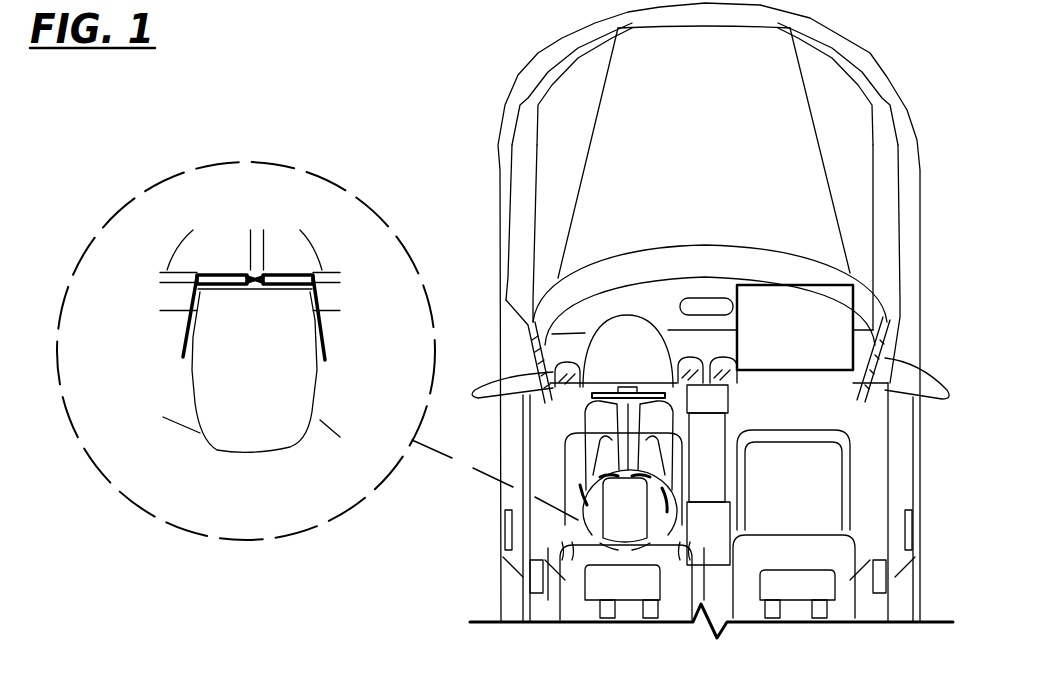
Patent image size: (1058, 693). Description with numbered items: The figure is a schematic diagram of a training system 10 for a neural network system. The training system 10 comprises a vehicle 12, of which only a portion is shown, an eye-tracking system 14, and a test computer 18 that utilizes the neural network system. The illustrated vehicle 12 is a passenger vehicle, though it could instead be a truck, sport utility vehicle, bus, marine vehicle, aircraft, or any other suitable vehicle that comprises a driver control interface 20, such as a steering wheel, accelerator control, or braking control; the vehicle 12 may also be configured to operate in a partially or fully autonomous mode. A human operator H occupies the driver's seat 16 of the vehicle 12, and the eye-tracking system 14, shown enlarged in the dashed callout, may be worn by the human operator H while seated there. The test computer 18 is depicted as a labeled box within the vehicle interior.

The training system 10 is at (342, 74).
The vehicle 12 is at (533, 48).
The eye-tracking system 14 is at (182, 296).
The driver's seat 16 is at (690, 453).
The test computer 18 is at (782, 364).
The driver control interface 20 is at (650, 384).
The human operator H is at (200, 452).